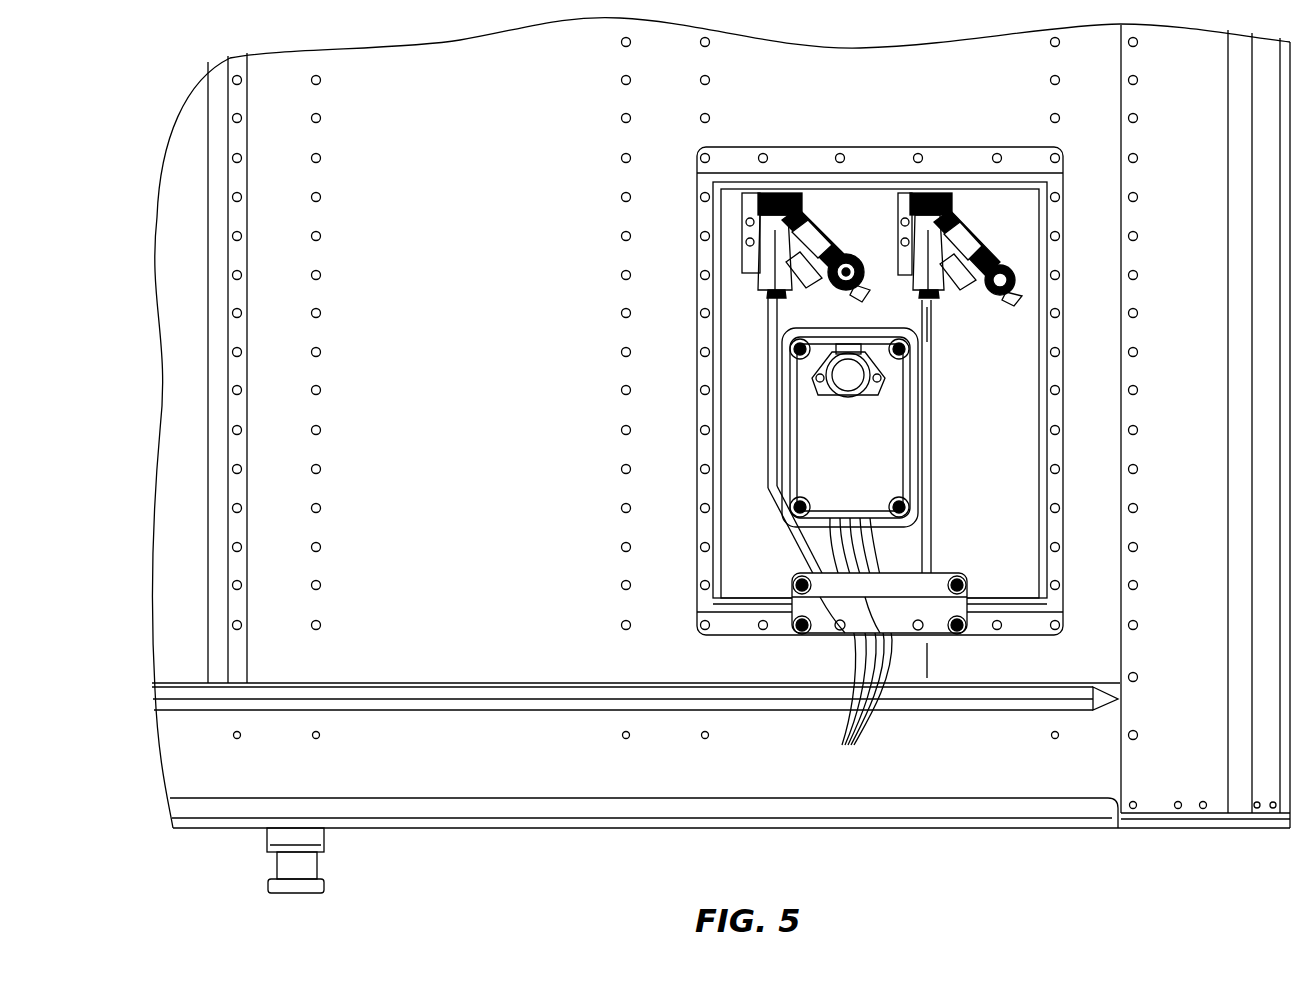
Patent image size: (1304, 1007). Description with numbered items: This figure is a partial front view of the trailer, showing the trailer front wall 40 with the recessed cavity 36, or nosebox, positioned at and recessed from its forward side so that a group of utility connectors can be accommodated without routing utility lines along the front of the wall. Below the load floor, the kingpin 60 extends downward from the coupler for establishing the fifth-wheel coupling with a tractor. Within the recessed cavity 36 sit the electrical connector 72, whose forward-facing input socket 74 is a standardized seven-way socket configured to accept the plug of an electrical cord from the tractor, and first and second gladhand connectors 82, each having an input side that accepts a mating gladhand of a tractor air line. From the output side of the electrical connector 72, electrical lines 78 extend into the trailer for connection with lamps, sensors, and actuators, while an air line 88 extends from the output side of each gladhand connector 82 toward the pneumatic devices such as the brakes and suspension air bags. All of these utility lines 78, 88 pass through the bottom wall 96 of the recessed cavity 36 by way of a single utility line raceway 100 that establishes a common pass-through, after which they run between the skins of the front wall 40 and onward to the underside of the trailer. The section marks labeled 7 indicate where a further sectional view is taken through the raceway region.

The trailer front wall 40 is at (440, 302).
The kingpin 60 is at (310, 868).
The bottom wall 96 is at (1005, 590).
The recessed cavity 36 is at (1000, 478).
The air line 88 is at (770, 390).
The electrical connector 72 is at (870, 440).
The input socket 74 is at (848, 385).
The electrical lines 78 is at (862, 645).
The utility line raceway 100 is at (815, 610).
The gladhand connectors 82 is at (819, 208).
The section line 7 is at (935, 325).